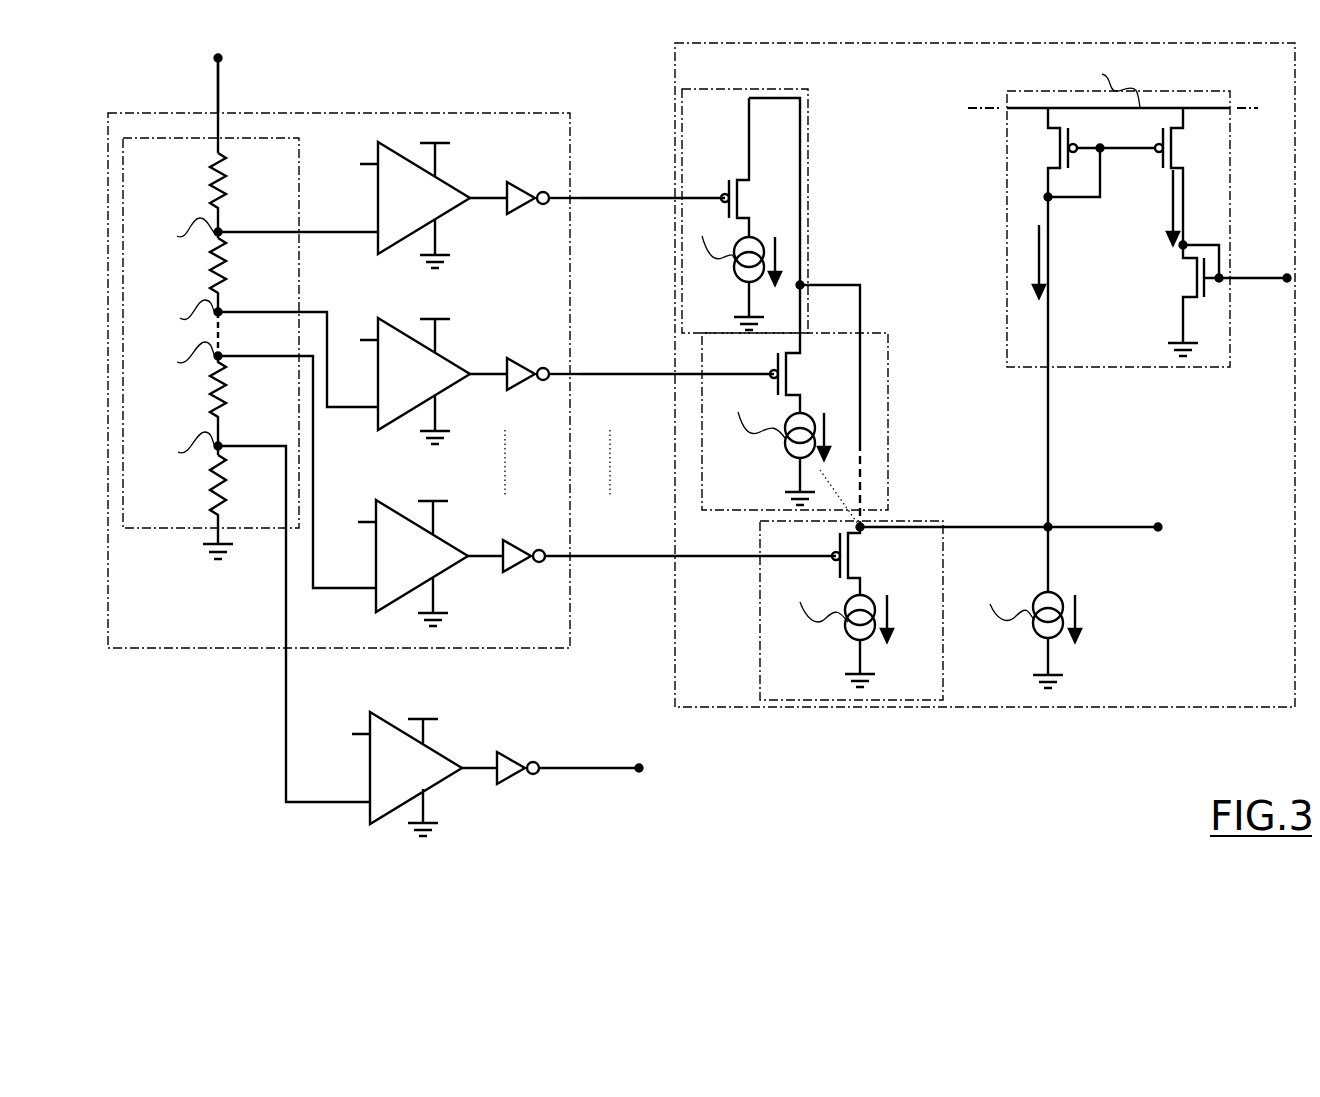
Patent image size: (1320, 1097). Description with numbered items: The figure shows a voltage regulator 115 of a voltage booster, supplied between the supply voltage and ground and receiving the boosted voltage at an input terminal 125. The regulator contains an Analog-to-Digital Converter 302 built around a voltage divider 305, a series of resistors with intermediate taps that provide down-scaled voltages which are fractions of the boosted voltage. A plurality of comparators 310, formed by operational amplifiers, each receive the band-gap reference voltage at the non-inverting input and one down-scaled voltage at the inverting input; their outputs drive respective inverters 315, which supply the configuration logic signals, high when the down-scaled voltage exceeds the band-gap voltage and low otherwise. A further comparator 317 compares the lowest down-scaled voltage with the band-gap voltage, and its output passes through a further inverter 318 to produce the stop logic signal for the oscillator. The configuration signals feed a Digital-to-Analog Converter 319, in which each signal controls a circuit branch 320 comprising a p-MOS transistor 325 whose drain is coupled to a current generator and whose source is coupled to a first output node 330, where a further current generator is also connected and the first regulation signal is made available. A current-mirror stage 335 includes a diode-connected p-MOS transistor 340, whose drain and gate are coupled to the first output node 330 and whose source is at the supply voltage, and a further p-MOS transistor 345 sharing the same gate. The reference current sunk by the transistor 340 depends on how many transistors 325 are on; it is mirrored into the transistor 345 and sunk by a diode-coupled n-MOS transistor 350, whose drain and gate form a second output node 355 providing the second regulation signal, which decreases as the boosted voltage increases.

The voltage regulator 115 is at (905, 758).
The input terminal 125 is at (218, 70).
The Analog-to-Digital Converter 302 is at (196, 648).
The voltage divider 305 is at (172, 528).
The comparators 310 is at (446, 186).
The inverters 315 is at (516, 186).
The further comparator 317 is at (432, 754).
The further inverter 318 is at (504, 754).
The Digital-to-Analog Converter 319 is at (675, 686).
The circuit branches 320 is at (804, 90).
The p-MOS transistor 325 is at (750, 200).
The first output node 330 is at (1050, 530).
The current-mirror stage 335 is at (1007, 145).
The diode-connected p-MOS transistor 340 is at (1060, 150).
The further p-MOS transistor 345 is at (1170, 158).
The diode-coupled n-MOS transistor 350 is at (1172, 274).
The second output node 355 is at (1287, 274).